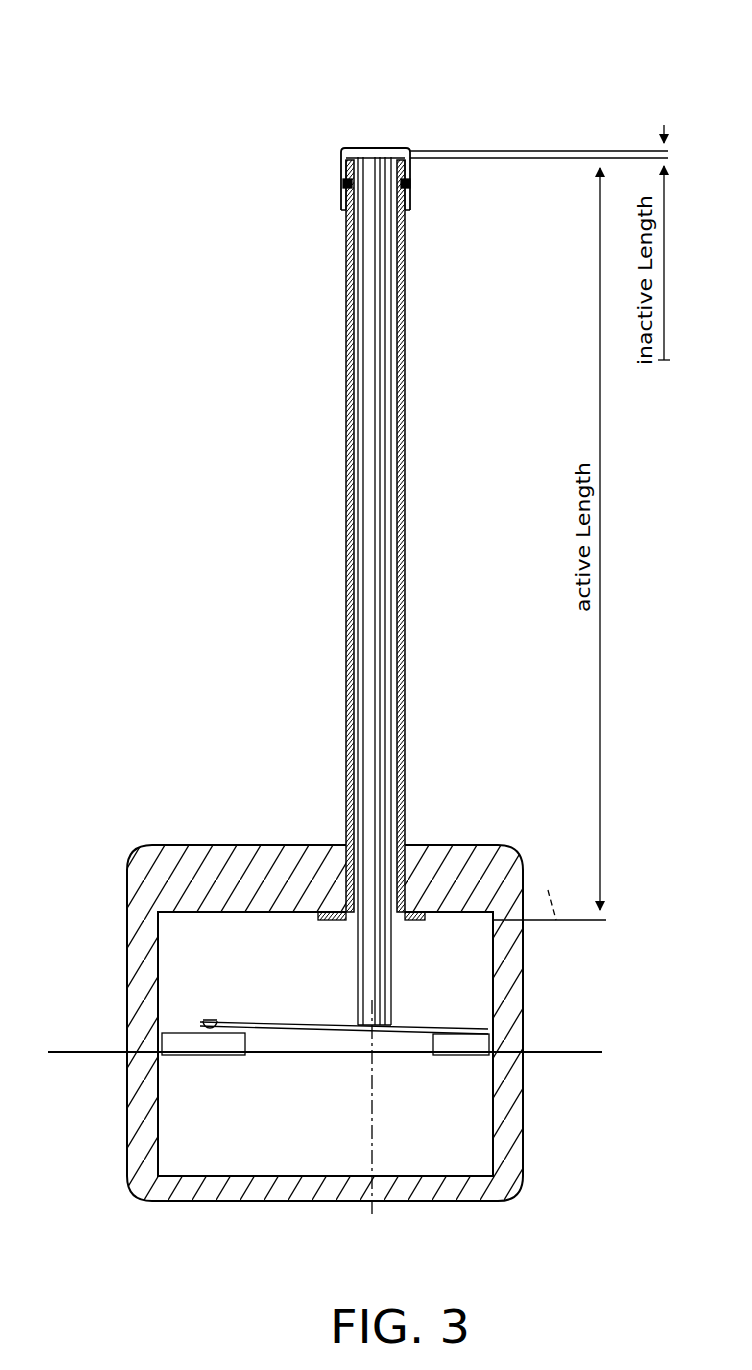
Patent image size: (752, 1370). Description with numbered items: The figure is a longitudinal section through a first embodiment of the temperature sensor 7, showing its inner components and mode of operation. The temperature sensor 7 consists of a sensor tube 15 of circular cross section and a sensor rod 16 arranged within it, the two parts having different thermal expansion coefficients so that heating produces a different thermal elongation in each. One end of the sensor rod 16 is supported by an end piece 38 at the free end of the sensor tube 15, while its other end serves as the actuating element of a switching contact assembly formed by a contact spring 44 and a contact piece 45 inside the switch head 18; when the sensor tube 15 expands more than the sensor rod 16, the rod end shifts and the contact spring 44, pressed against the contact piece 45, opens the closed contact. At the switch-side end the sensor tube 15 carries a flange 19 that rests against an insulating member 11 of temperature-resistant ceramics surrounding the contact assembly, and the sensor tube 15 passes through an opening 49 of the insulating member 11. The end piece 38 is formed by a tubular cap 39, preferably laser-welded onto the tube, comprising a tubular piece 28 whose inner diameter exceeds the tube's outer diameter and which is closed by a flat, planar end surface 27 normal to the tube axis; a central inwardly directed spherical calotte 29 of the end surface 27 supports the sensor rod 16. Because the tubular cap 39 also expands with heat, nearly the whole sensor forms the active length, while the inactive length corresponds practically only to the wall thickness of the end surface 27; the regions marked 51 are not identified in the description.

The temperature sensor 7 is at (428, 384).
The insulating member 11 is at (510, 1182).
The sensor tube 15 is at (401, 718).
The sensor rod 16 is at (383, 557).
The switch head 18 is at (636, 1172).
The flange 19 is at (463, 845).
The end surface 27 is at (358, 148).
The tubular piece 28 is at (410, 200).
The spherical calotte 29 is at (372, 150).
The end piece 38 is at (323, 137).
The tubular cap 39 is at (341, 158).
The contact spring 44 is at (203, 1022).
The contact piece 45 is at (183, 1047).
The opening 49 is at (403, 847).
The seal rings 51 is at (405, 181).